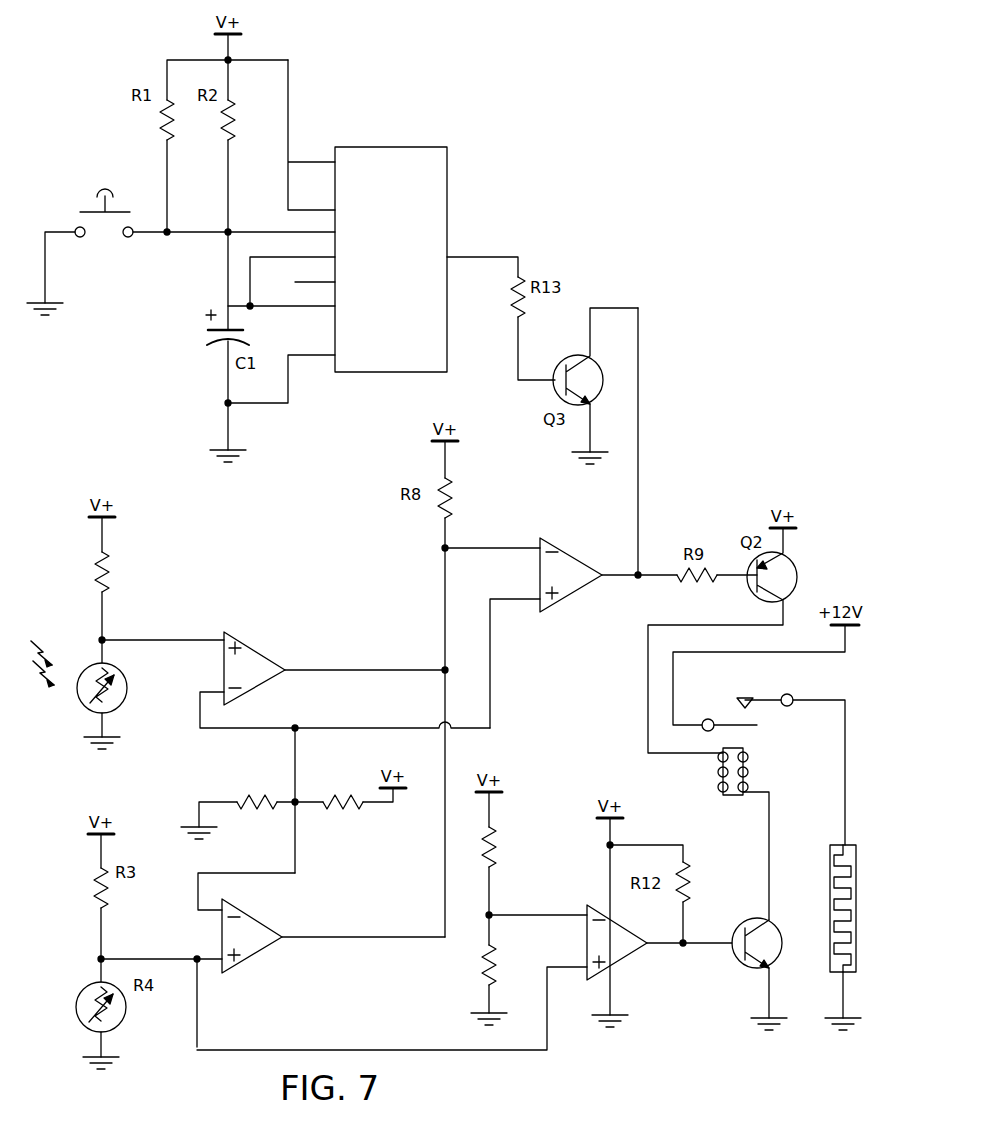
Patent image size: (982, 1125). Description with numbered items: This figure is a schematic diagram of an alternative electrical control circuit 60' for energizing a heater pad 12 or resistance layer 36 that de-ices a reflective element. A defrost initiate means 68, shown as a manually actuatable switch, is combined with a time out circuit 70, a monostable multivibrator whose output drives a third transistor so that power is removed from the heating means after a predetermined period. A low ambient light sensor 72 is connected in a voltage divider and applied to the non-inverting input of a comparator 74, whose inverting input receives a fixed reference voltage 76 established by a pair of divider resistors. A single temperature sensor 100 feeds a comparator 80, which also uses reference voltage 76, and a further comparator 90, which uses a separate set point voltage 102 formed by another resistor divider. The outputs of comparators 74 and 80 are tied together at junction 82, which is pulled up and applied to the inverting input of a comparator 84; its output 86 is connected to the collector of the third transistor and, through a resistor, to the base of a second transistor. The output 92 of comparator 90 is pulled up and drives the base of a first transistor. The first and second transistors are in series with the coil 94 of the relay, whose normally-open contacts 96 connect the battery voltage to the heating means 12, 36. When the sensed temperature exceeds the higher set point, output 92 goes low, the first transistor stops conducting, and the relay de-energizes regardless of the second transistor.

The defrost initiate means 68 is at (131, 147).
The time out circuit 70 is at (549, 203).
The control circuit 60' is at (260, 622).
The low ambient light sensor 72 is at (127, 700).
The comparator 74 is at (252, 645).
The fixed reference voltage 76 is at (297, 806).
The comparator 80 is at (250, 958).
The junction 82 is at (443, 697).
The comparator 84 is at (561, 600).
The output 86 is at (640, 572).
The comparator 90 is at (632, 962).
The output 92 is at (707, 943).
The coil 94 is at (722, 770).
The normally-open contacts 96 is at (765, 698).
The temperature sensor 100 is at (125, 1010).
The set point voltage 102 is at (489, 893).
The heater pad 12 is at (817, 916).
The resistance layer 36 is at (830, 859).